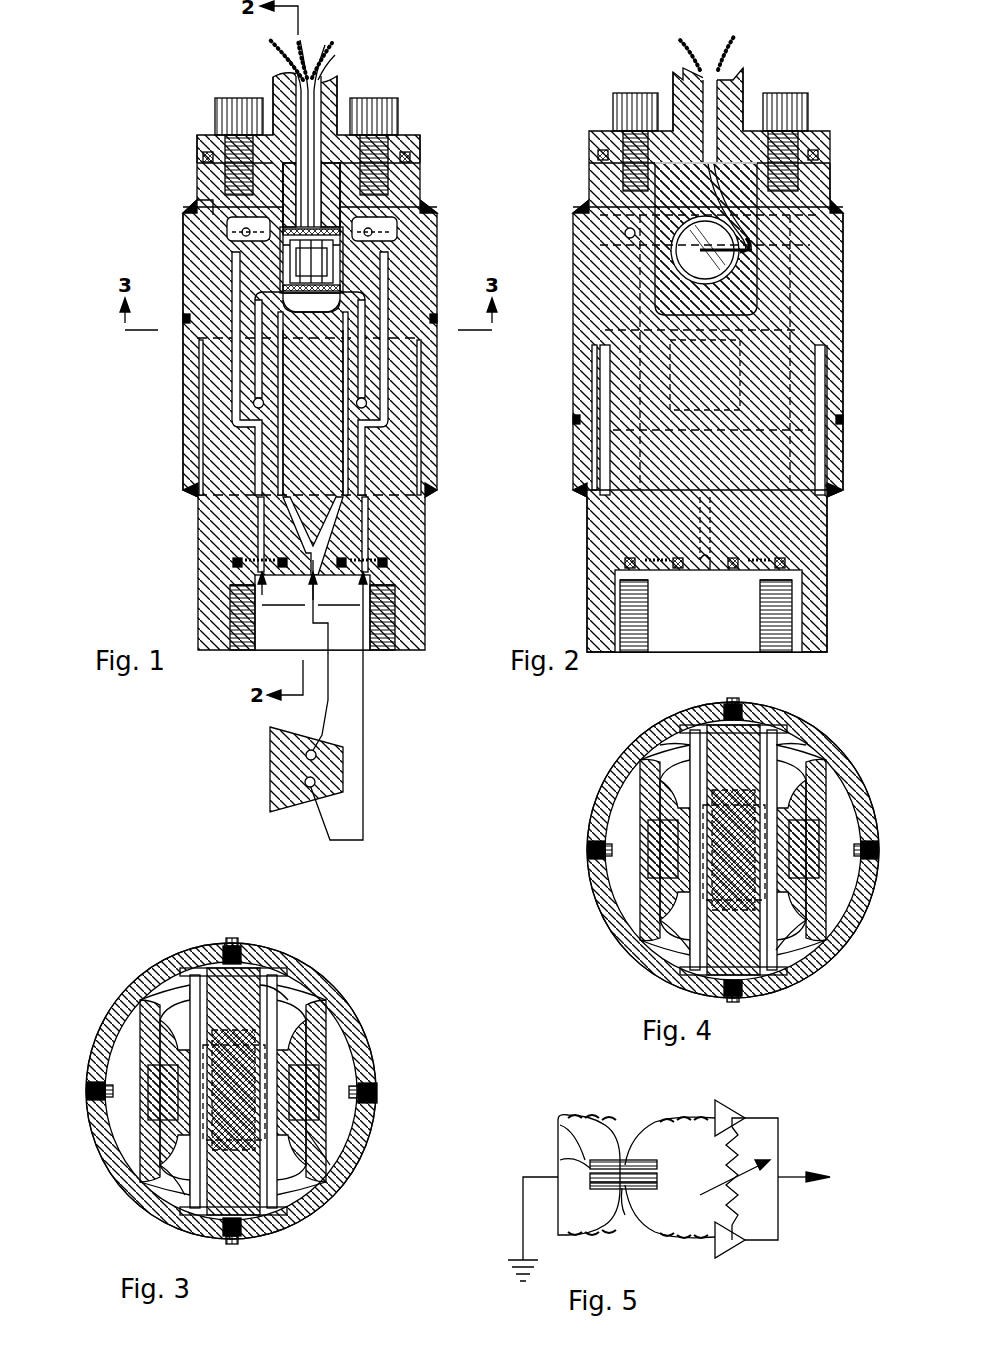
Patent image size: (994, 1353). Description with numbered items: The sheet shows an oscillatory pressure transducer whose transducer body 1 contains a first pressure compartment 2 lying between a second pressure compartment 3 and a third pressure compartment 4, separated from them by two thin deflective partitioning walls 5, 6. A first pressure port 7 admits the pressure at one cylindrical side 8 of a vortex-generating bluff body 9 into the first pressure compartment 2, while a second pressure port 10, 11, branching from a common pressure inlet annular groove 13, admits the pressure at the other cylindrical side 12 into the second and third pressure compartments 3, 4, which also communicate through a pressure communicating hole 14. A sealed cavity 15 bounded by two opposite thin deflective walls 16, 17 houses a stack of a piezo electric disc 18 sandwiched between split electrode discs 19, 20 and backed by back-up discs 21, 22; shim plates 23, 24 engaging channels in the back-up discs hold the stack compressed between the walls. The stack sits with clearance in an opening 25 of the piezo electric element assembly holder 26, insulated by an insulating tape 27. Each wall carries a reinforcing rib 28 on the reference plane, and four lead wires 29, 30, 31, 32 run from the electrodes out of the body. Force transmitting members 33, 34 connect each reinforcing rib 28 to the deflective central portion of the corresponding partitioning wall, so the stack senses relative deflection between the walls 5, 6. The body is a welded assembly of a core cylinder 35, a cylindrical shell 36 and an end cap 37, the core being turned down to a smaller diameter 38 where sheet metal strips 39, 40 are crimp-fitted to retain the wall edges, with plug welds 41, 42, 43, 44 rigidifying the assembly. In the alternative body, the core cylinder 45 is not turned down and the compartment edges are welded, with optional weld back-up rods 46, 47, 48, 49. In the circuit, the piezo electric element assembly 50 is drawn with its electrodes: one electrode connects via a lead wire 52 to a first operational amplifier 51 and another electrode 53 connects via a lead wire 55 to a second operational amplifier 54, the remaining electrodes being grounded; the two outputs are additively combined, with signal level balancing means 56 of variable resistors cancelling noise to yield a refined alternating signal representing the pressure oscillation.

In FIG. 1, the transducer body 1 is at (210, 300).
In FIG. 2, the transducer body 1 is at (820, 235).
In FIG. 1, the first pressure compartment 2 is at (310, 400).
In FIG. 3, the first pressure compartment 2 is at (210, 965).
In FIG. 4, the first pressure compartment 2 is at (705, 750).
In FIG. 1, the second pressure compartment 3 is at (236, 392).
In FIG. 3, the second pressure compartment 3 is at (165, 1000).
In FIG. 4, the second pressure compartment 3 is at (660, 922).
In FIG. 1, the third pressure compartment 4 is at (384, 392).
In FIG. 3, the third pressure compartment 4 is at (300, 1000).
In FIG. 4, the third pressure compartment 4 is at (810, 922).
In FIG. 1, the thin deflective partitioning wall 5 is at (280, 410).
In FIG. 3, the thin deflective partitioning wall 5 is at (192, 1180).
In FIG. 1, the thin deflective partitioning wall 6 is at (345, 420).
In FIG. 3, the thin deflective partitioning wall 6 is at (275, 1185).
In FIG. 1, the first pressure port 7 is at (305, 607).
In FIG. 1, the cylindrical side of bluff body 8 is at (290, 730).
In FIG. 1, the vortex-generating bluff body 9 is at (270, 775).
In FIG. 1, the second pressure port 10 is at (260, 525).
In FIG. 1, the second pressure port 11 is at (366, 525).
In FIG. 1, the cylindrical side of bluff body 12 is at (280, 805).
In FIG. 1, the common pressure inlet annular groove 13 is at (245, 560).
In FIG. 1, the pressure communicating hole 14 is at (200, 158).
In FIG. 2, the pressure communicating hole 14 is at (590, 180).
In FIG. 1, the cavity 15 is at (240, 115).
In FIG. 1, the thin deflective wall 16 is at (285, 242).
In FIG. 1, the thin deflective wall 17 is at (322, 290).
In FIG. 1, the piezo electric disc 18 is at (374, 140).
In FIG. 5, the piezo electric disc 18 is at (556, 1140).
In FIG. 1, the split electrode disc 19 is at (300, 280).
In FIG. 2, the split electrode disc 19 is at (712, 272).
In FIG. 5, the split electrode disc 19 is at (560, 1118).
In FIG. 1, the split electrode disc 20 is at (333, 300).
In FIG. 5, the split electrode disc 20 is at (556, 1163).
In FIG. 1, the back-up disc 21 is at (214, 212).
In FIG. 1, the back-up disc 22 is at (345, 268).
In FIG. 1, the shim plate 23 is at (245, 225).
In FIG. 1, the shim plate 24 is at (340, 240).
In FIG. 1, the opening 25 is at (290, 302).
In FIG. 2, the opening 25 is at (752, 250).
In FIG. 1, the piezo electric element assembly holder 26 is at (340, 105).
In FIG. 2, the piezo electric element assembly holder 26 is at (690, 110).
In FIG. 1, the insulating tape 27 is at (290, 150).
In FIG. 1, the reinforcing rib 28 is at (385, 230).
In FIG. 2, the reinforcing rib 28 is at (835, 195).
In FIG. 1, the lead wire 29 is at (270, 40).
In FIG. 2, the lead wire 29 is at (680, 40).
In FIG. 1, the lead wire 30 is at (300, 38).
In FIG. 2, the lead wire 30 is at (735, 38).
In FIG. 1, the lead wire 31 is at (332, 43).
In FIG. 1, the lead wire 32 is at (335, 55).
In FIG. 1, the force transmitting member 33 is at (200, 352).
In FIG. 2, the force transmitting member 33 is at (826, 392).
In FIG. 3, the force transmitting member 33 is at (160, 1082).
In FIG. 4, the force transmitting member 33 is at (665, 858).
In FIG. 1, the force transmitting member 34 is at (420, 352).
In FIG. 3, the force transmitting member 34 is at (305, 1105).
In FIG. 4, the force transmitting member 34 is at (810, 860).
In FIG. 2, the core cylinder 35 is at (790, 540).
In FIG. 3, the core cylinder 35 is at (130, 1020).
In FIG. 2, the cylindrical shell 36 is at (840, 490).
In FIG. 3, the cylindrical shell 36 is at (362, 1025).
In FIG. 2, the end cap 37 is at (790, 130).
In FIG. 2, the turned-down section 38 is at (820, 458).
In FIG. 3, the turned-down section 38 is at (340, 1150).
In FIG. 3, the sheet metal strip 39 is at (290, 1010).
In FIG. 3, the sheet metal strip 40 is at (185, 1205).
In FIG. 3, the plug weld 41 is at (235, 945).
In FIG. 3, the plug weld 42 is at (372, 1090).
In FIG. 3, the plug weld 43 is at (235, 1240).
In FIG. 3, the plug weld 44 is at (95, 1093).
In FIG. 4, the core cylinder 45 is at (620, 800).
In FIG. 4, the weld back-up rod 46 is at (690, 745).
In FIG. 4, the weld back-up rod 47 is at (778, 755).
In FIG. 4, the weld back-up rod 48 is at (690, 950).
In FIG. 4, the weld back-up rod 49 is at (790, 945).
In FIG. 5, the core 50 is at (650, 1168).
In FIG. 5, the first operational amplifier 51 is at (745, 1110).
In FIG. 5, the lead wire 52 is at (672, 1118).
In FIG. 5, the electrode 53 is at (648, 1190).
In FIG. 5, the second operational amplifier 54 is at (745, 1245).
In FIG. 5, the lead wire 55 is at (680, 1240).
In FIG. 5, the signal level balancing means 56 is at (765, 1190).